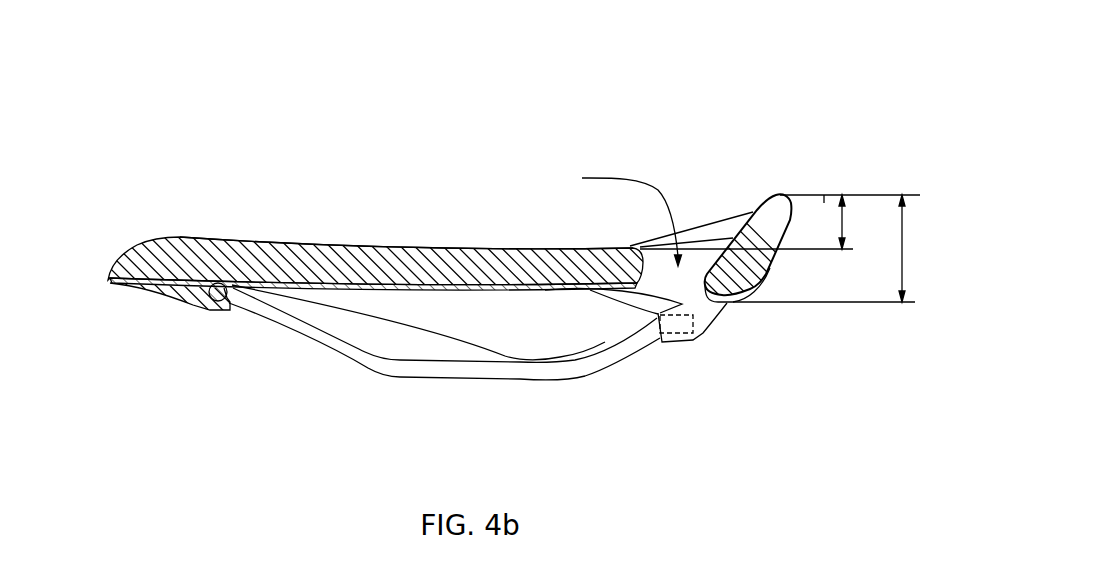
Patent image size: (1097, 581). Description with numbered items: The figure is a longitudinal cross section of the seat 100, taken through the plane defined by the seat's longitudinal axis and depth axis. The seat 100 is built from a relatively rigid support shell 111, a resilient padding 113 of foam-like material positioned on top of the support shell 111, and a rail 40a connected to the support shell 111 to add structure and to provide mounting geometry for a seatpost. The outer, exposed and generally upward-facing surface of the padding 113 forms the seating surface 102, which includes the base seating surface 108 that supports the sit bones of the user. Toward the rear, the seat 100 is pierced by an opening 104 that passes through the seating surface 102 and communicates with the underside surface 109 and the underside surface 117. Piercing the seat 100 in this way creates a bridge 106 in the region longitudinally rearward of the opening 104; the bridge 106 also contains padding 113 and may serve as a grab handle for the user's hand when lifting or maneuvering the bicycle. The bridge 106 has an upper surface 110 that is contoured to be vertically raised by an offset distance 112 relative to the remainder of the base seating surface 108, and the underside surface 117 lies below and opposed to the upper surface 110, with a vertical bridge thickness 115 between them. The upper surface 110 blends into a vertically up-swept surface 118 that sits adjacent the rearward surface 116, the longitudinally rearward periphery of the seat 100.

The seat 100 is at (465, 239).
The seating surface 102 is at (398, 246).
The opening 104 is at (607, 214).
The bridge 106 is at (787, 194).
The base seating surface 108 is at (518, 247).
The underside surface 109 is at (619, 290).
The upper surface 110 is at (775, 197).
The support shell 111 is at (703, 325).
The offset distance 112 is at (843, 222).
The resilient padding 113 is at (289, 247).
The vertical bridge thickness 115 is at (903, 255).
The rearward surface 116 is at (824, 200).
The underside surface 117 is at (727, 307).
The up-swept surface 118 is at (722, 220).
The rail 40a is at (308, 328).